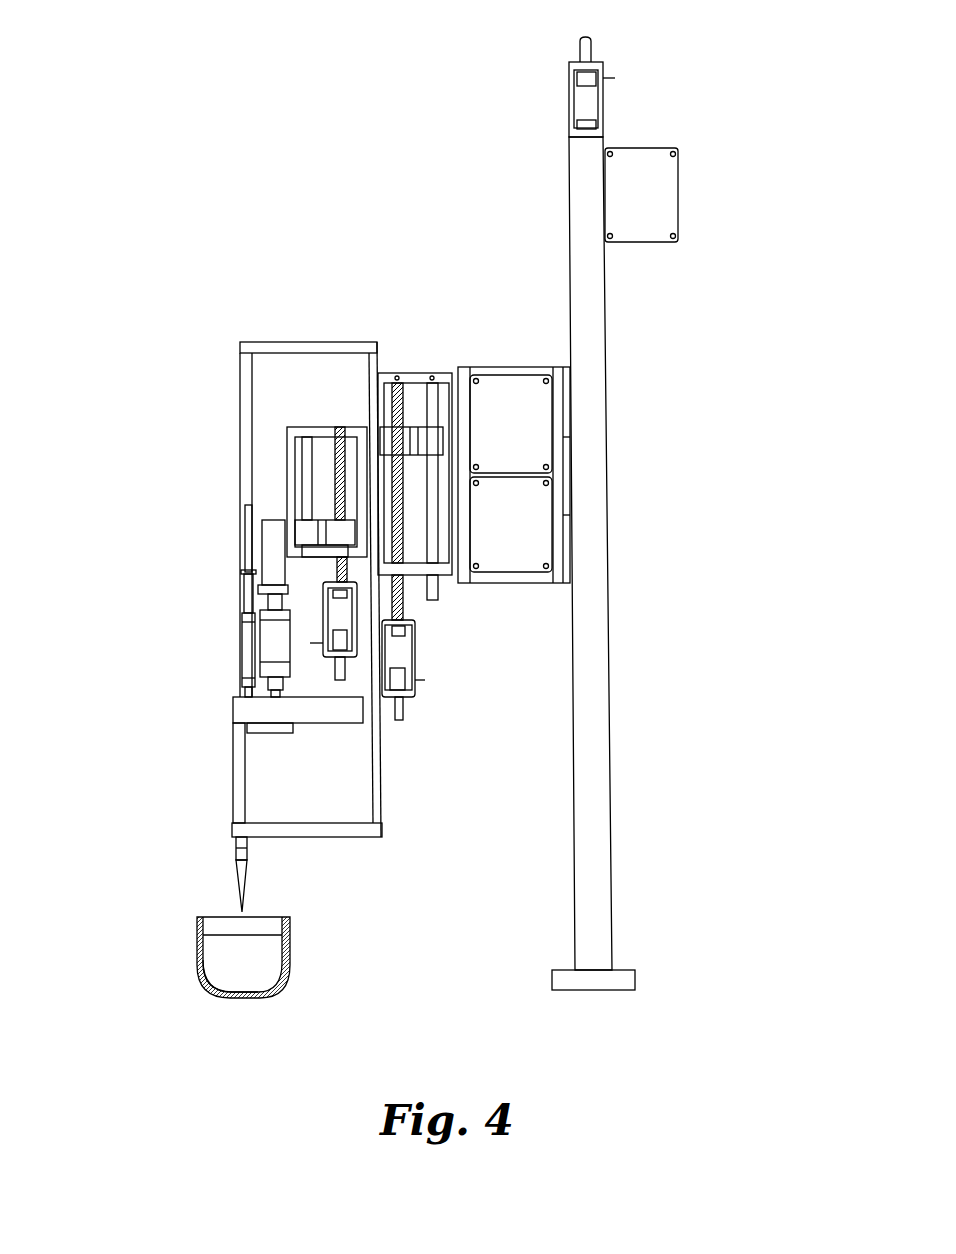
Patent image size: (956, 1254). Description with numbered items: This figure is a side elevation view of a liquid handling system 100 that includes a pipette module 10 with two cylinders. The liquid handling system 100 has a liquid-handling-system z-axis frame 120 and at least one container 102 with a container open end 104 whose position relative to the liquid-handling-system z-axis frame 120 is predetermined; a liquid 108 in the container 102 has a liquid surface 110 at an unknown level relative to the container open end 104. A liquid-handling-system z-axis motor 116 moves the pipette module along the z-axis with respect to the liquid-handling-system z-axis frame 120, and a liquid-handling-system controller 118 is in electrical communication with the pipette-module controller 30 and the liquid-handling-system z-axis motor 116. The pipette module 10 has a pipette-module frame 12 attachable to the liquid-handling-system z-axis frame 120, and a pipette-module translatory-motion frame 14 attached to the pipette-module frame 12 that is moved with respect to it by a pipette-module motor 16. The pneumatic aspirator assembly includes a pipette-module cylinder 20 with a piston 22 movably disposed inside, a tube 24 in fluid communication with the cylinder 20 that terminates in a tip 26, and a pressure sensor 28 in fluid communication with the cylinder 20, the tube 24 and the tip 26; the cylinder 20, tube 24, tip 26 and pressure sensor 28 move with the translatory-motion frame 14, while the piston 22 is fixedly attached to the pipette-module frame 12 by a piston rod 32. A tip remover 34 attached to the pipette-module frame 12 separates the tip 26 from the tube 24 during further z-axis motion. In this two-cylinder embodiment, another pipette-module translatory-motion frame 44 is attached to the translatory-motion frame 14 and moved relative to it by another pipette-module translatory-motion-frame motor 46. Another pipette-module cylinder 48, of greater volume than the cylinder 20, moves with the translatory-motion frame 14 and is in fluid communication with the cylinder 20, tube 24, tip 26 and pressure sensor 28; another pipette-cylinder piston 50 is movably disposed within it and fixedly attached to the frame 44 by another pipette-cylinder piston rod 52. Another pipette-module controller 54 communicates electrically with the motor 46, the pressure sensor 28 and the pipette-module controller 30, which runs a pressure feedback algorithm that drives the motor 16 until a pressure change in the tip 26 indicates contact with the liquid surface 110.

The liquid handling system 100 is at (710, 94).
The pipette module 10 is at (292, 297).
The pipette-module frame 12 is at (368, 342).
The pipette-module translatory-motion frame 14 is at (305, 427).
The pipette-module motor 16 is at (415, 640).
The pipette-module cylinder 20 is at (245, 660).
The piston 22 is at (245, 585).
The tube 24 is at (235, 785).
The tip 26 is at (238, 893).
The pressure sensor 28 is at (238, 738).
The pipette-module controller 30 is at (508, 560).
The piston rod 32 is at (240, 463).
The tip remover 34 is at (233, 830).
The another pipette-module translatory-motion frame 44 is at (262, 548).
The another pipette-module translatory-motion-frame motor 46 is at (330, 660).
The another pipette-module cylinder 48 is at (262, 632).
The another pipette-cylinder piston 50 is at (246, 600).
The another pipette-cylinder piston rod 52 is at (262, 562).
The another pipette-module controller 54 is at (500, 385).
The container 102 is at (198, 957).
The container open end 104 is at (176, 918).
The liquid 108 is at (215, 975).
The liquid surface 110 is at (248, 935).
The liquid-handling-system z-axis motor 116 is at (606, 66).
The liquid-handling-system controller 118 is at (682, 194).
The liquid-handling-system z-axis frame 120 is at (608, 487).